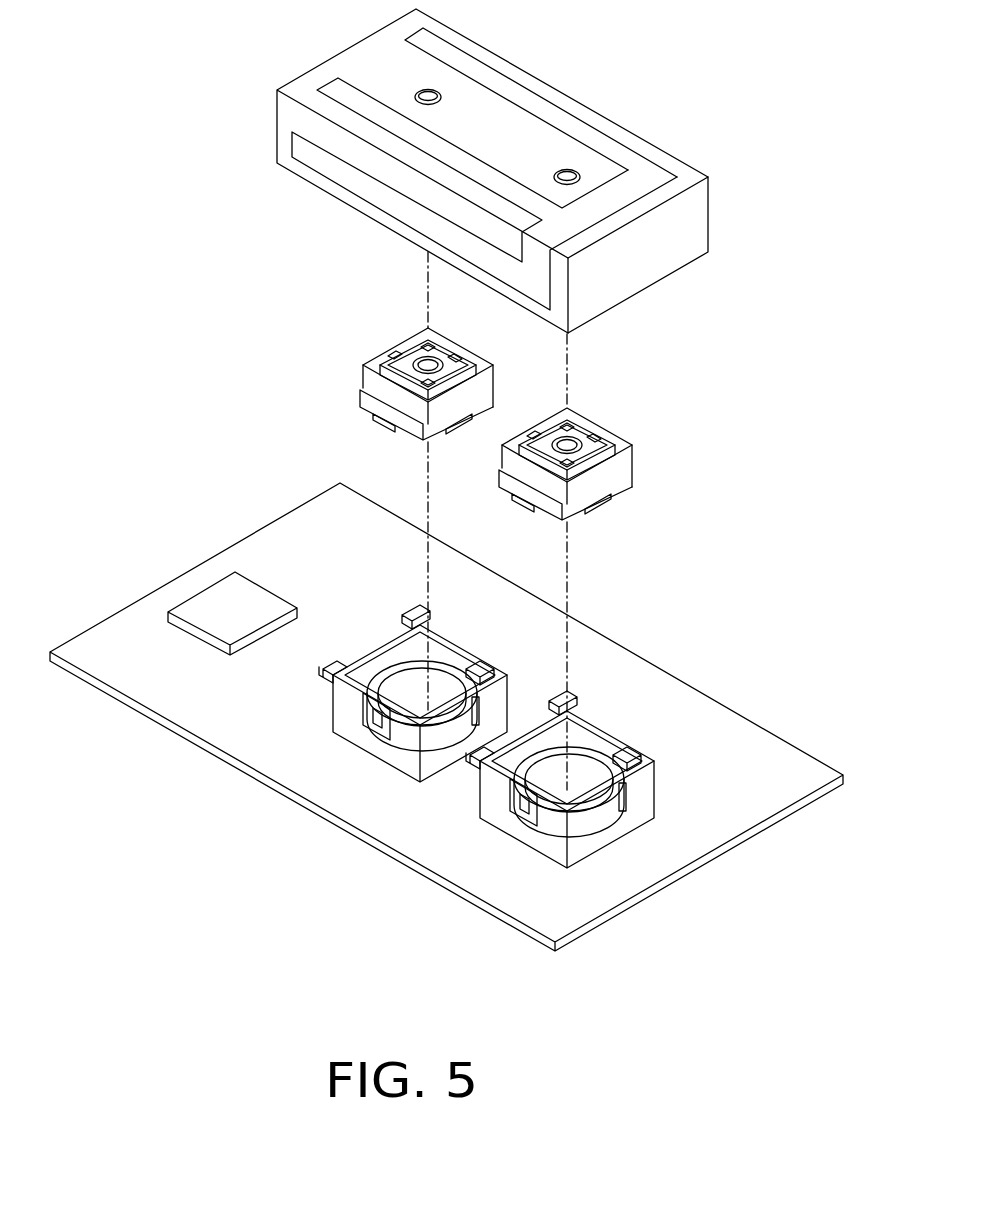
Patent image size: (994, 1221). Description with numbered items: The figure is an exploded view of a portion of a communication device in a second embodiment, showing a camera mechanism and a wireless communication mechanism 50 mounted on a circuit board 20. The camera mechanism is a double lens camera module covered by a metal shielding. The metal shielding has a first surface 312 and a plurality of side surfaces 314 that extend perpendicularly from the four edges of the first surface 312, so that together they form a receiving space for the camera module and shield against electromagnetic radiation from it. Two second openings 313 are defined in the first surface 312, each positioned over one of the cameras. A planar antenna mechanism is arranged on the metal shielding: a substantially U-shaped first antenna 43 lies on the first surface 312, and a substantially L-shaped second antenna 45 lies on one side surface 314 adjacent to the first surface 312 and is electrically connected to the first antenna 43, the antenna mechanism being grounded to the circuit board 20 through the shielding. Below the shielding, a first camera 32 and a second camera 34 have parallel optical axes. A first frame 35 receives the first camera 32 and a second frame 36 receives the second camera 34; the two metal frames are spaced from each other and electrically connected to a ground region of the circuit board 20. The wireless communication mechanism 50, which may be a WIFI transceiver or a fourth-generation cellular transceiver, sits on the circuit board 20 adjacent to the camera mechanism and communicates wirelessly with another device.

The first surface 312 is at (357, 60).
The second opening 313 is at (428, 97).
The first antenna 43 is at (551, 118).
The second antenna 45 is at (352, 182).
The side surface 314 is at (690, 230).
The first camera 32 is at (373, 388).
The second camera 34 is at (623, 468).
The circuit board 20 is at (185, 707).
The wireless communication mechanism 50 is at (222, 608).
The first frame 35 is at (390, 758).
The second frame 36 is at (540, 848).